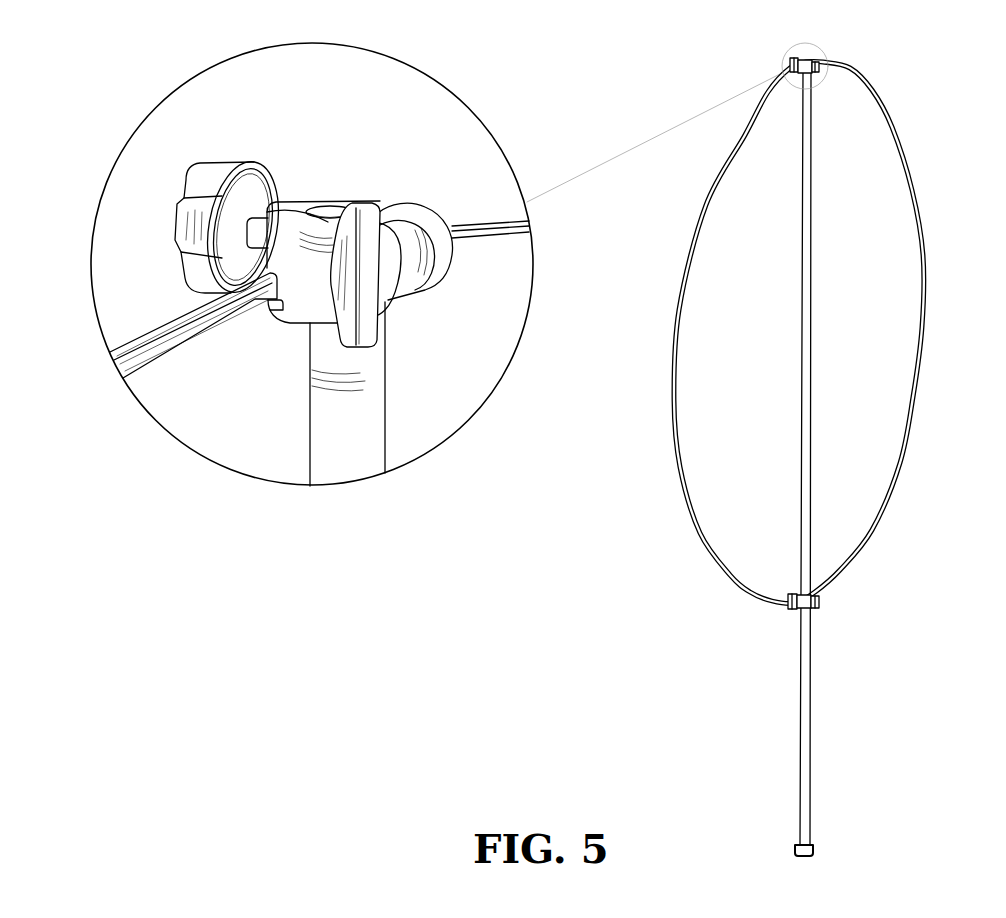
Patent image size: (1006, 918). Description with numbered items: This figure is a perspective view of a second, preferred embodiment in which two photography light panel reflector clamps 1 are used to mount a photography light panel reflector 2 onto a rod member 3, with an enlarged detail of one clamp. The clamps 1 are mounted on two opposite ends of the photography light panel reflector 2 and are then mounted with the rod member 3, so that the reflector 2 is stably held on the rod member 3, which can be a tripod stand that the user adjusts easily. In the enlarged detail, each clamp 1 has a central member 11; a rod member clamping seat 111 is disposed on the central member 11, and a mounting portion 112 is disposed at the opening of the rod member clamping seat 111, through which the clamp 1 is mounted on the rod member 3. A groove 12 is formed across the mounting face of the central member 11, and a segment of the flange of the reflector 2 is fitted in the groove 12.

The photography light panel reflector clamp 1 is at (332, 145).
The photography light panel reflector 2 is at (168, 322).
The rod member 3 is at (219, 172).
The central member 11 is at (325, 204).
The rod member clamping seat 111 is at (379, 207).
The mounting portion 112 is at (423, 211).
The groove 12 is at (272, 313).